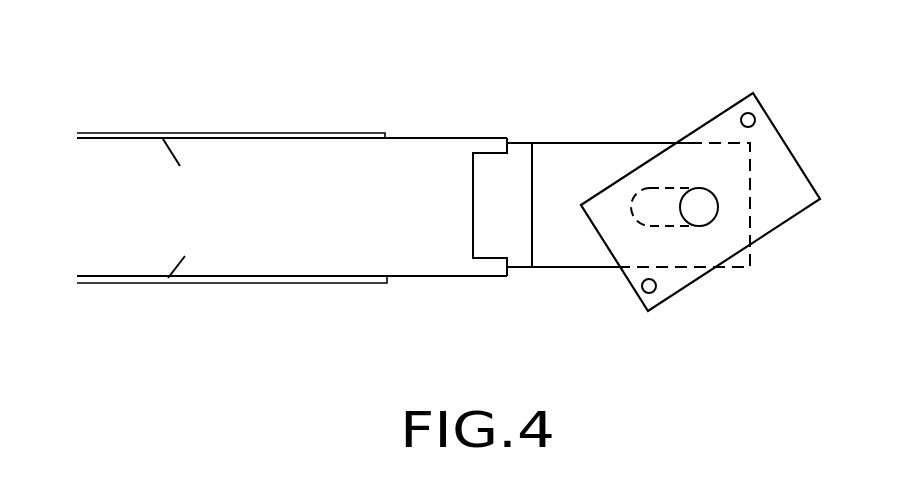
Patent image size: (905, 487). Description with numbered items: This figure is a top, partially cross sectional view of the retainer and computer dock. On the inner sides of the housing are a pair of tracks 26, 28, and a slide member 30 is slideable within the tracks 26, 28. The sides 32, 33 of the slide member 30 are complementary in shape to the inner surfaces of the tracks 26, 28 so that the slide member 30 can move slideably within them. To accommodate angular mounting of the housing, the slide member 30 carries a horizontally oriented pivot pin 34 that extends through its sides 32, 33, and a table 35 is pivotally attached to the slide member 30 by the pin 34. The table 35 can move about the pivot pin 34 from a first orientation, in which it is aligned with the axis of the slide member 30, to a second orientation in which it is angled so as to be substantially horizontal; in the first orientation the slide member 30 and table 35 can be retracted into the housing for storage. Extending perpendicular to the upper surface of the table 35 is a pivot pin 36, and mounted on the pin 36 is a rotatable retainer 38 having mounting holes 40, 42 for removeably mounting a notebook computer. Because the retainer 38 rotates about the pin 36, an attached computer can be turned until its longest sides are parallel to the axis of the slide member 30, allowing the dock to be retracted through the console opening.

The track 26 is at (180, 166).
The track 28 is at (185, 256).
The slide member 30 is at (435, 124).
The side of slide member 32 is at (398, 137).
The side of slide member 33 is at (423, 276).
The pivot pin 34 is at (487, 137).
The table 35 is at (589, 142).
The pivot pin 36 is at (698, 188).
The rotatable retainer 38 is at (723, 112).
The mounting hole 40 is at (753, 112).
The mounting hole 42 is at (644, 291).